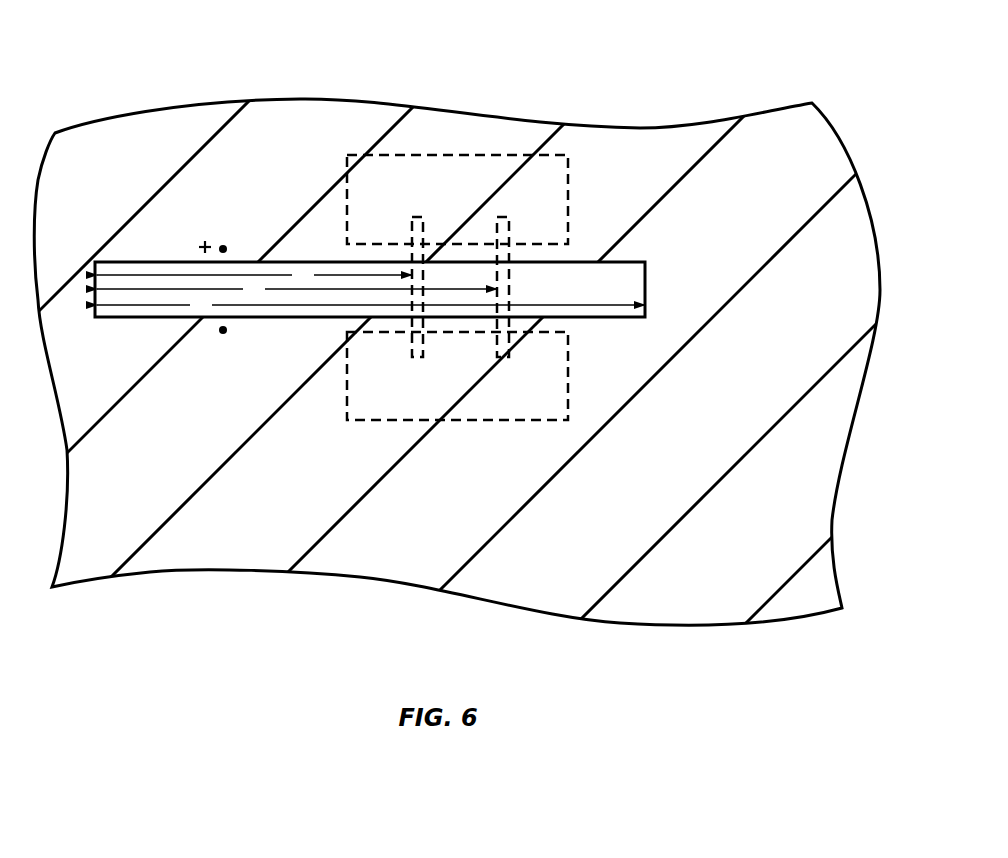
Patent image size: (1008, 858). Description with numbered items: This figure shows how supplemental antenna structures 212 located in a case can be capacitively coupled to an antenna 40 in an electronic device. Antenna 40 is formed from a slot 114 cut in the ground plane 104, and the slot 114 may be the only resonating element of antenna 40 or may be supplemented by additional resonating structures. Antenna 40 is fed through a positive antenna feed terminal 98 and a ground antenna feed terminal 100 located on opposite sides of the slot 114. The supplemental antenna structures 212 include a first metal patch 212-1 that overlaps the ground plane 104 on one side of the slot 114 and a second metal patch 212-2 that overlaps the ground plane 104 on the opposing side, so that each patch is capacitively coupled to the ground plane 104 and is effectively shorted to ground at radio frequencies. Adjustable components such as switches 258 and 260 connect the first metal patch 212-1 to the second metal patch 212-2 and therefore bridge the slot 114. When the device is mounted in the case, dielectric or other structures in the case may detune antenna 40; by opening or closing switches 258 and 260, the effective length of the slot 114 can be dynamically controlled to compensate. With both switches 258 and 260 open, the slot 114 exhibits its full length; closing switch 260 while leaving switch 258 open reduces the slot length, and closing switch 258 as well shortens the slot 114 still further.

The antenna 40 is at (725, 243).
The supplemental antenna structures 212 is at (527, 268).
The first metal patch 212-1 is at (417, 155).
The second metal patch 212-2 is at (470, 422).
The slot 114 is at (170, 274).
The positive antenna feed terminal 98 is at (223, 246).
The ground antenna feed terminal 100 is at (223, 334).
The ground plane 104 is at (355, 557).
The switch 258 is at (408, 290).
The switch 260 is at (510, 275).